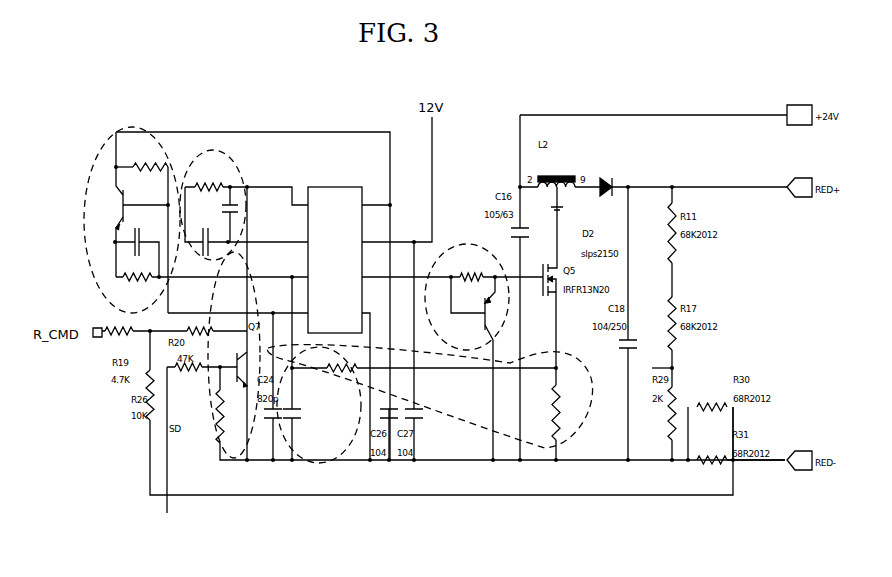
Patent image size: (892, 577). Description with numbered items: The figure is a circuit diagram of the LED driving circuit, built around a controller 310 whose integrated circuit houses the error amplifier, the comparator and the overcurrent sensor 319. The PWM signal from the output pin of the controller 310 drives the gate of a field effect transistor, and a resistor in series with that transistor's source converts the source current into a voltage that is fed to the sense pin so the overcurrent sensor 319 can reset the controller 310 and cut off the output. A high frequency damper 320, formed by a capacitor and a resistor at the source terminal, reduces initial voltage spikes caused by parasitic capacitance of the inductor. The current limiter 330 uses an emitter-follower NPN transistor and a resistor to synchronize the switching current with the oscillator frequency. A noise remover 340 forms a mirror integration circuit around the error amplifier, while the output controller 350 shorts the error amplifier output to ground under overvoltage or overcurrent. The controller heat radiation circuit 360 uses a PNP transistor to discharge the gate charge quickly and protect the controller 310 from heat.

The controller 310 is at (346, 187).
The overcurrent sensor 319 is at (545, 450).
The high frequency damper 320 is at (303, 461).
The current limiter 330 is at (130, 127).
The noise remover 340 is at (213, 150).
The output controller 350 is at (227, 460).
The controller heat radiation circuit 360 is at (461, 243).